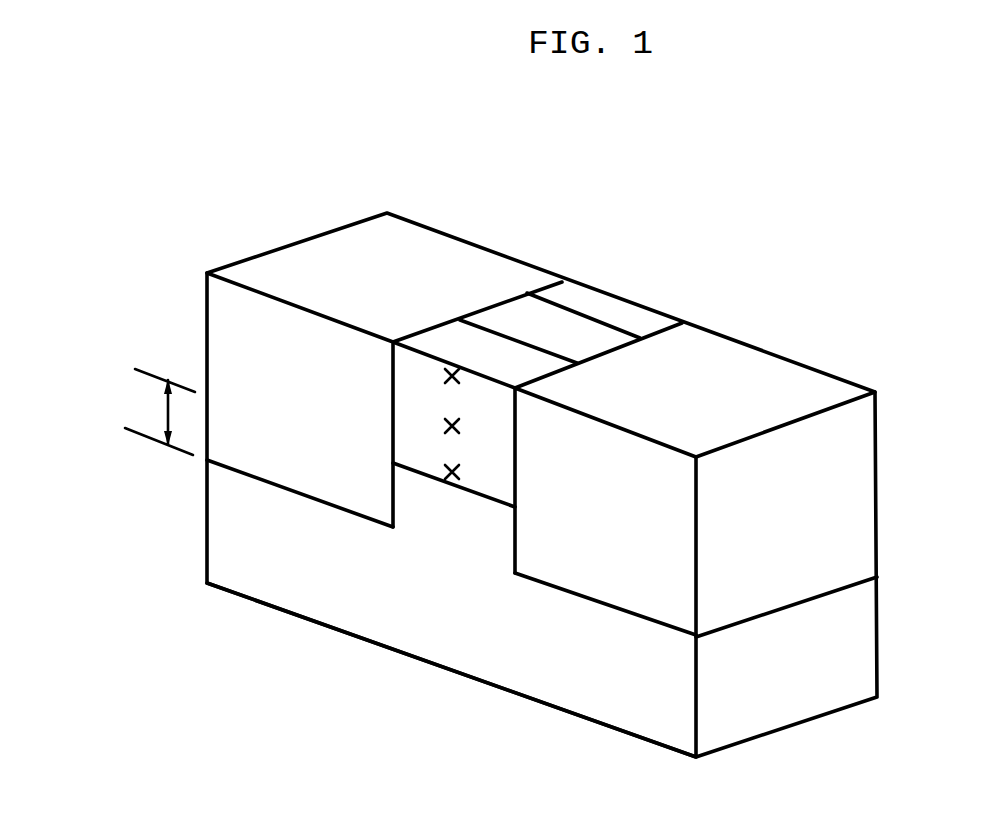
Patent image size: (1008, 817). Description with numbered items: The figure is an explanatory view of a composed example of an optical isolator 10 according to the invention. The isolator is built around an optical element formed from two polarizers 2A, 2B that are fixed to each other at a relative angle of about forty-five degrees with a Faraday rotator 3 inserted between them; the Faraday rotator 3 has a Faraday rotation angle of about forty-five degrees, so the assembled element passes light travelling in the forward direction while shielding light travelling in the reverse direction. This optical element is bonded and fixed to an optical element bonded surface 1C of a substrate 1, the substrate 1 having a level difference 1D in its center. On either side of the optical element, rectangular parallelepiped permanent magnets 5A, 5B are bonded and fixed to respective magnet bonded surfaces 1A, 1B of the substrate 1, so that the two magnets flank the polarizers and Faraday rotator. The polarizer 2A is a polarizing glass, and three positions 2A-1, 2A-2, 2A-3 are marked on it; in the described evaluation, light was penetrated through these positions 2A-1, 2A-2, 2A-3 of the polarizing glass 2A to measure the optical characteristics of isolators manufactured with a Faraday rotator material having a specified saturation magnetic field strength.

The optical isolator 10 is at (292, 219).
The substrate 1 is at (322, 582).
The magnet bonded surface 1A is at (287, 492).
The magnet bonded surface 1B is at (592, 603).
The optical element bonded surface 1C is at (472, 498).
The level difference 1D is at (167, 417).
The polarizer 2A is at (438, 343).
The position on polarizing glass 2A-1 is at (444, 470).
The position on polarizing glass 2A-2 is at (462, 428).
The position on polarizing glass 2A-3 is at (444, 374).
The polarizer 2B is at (583, 340).
The Faraday rotator 3 is at (628, 338).
The permanent magnet 5A is at (410, 268).
The permanent magnet 5B is at (722, 390).